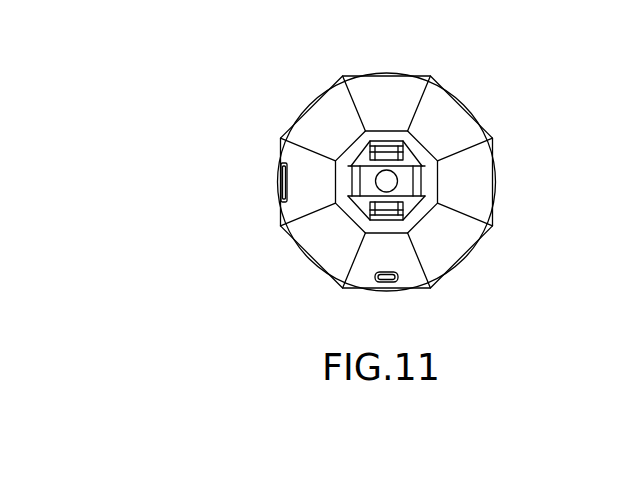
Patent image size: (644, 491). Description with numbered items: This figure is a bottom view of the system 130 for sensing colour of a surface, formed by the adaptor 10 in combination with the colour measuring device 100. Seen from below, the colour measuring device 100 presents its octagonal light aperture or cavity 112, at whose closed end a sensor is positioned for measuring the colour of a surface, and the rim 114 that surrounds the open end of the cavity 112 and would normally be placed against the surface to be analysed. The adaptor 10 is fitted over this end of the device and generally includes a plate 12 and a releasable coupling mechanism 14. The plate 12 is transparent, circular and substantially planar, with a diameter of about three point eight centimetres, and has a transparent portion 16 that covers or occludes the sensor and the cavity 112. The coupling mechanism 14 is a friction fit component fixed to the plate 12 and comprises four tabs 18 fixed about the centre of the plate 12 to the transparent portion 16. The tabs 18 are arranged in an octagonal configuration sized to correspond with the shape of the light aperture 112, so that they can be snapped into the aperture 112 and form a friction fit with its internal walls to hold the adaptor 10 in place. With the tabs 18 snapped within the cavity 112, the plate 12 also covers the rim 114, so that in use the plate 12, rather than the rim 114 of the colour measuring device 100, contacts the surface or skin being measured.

The adaptor 10 is at (301, 254).
The plate 12 is at (305, 177).
The releasable coupling mechanism 14 is at (415, 150).
The transparent portion 16 is at (382, 165).
The tabs 18 is at (432, 182).
The colour measuring device 100 is at (500, 126).
The light aperture or cavity 112 is at (412, 207).
The rim 114 is at (357, 151).
The system 130 is at (200, 108).